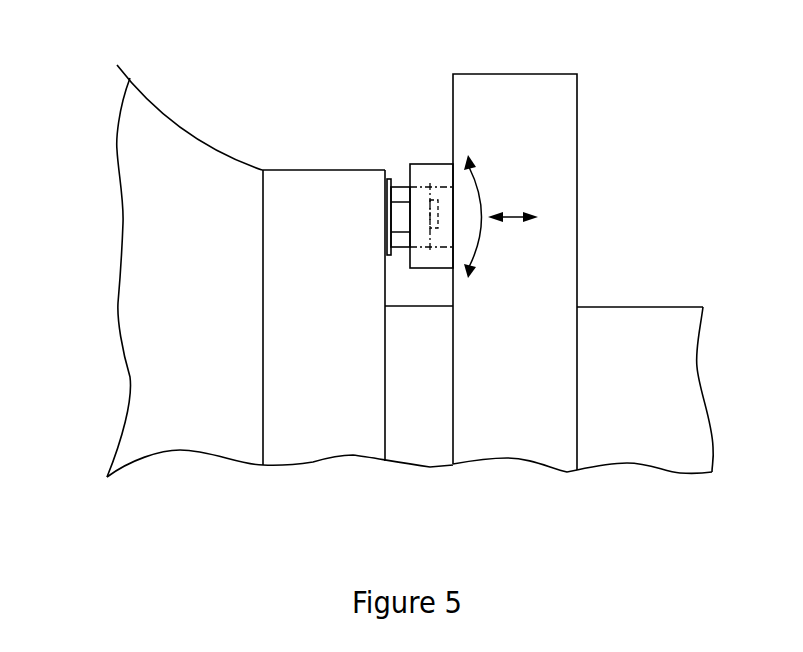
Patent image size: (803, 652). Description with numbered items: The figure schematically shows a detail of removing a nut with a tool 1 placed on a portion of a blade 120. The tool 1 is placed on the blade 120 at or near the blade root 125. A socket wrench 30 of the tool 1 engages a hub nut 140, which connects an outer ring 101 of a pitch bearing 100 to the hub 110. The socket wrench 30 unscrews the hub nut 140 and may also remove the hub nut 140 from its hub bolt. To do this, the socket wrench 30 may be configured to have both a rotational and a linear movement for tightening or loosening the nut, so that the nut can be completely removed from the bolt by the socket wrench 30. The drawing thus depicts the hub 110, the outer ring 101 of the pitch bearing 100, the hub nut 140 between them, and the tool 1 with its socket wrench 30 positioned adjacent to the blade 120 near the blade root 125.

The tool 1 is at (550, 93).
The socket wrench 30 is at (440, 163).
The pitch bearing 100 is at (322, 493).
The outer ring 101 is at (322, 190).
The hub 110 is at (152, 212).
The blade 120 is at (607, 338).
The blade root 125 is at (617, 517).
The hub nut 140 is at (403, 187).